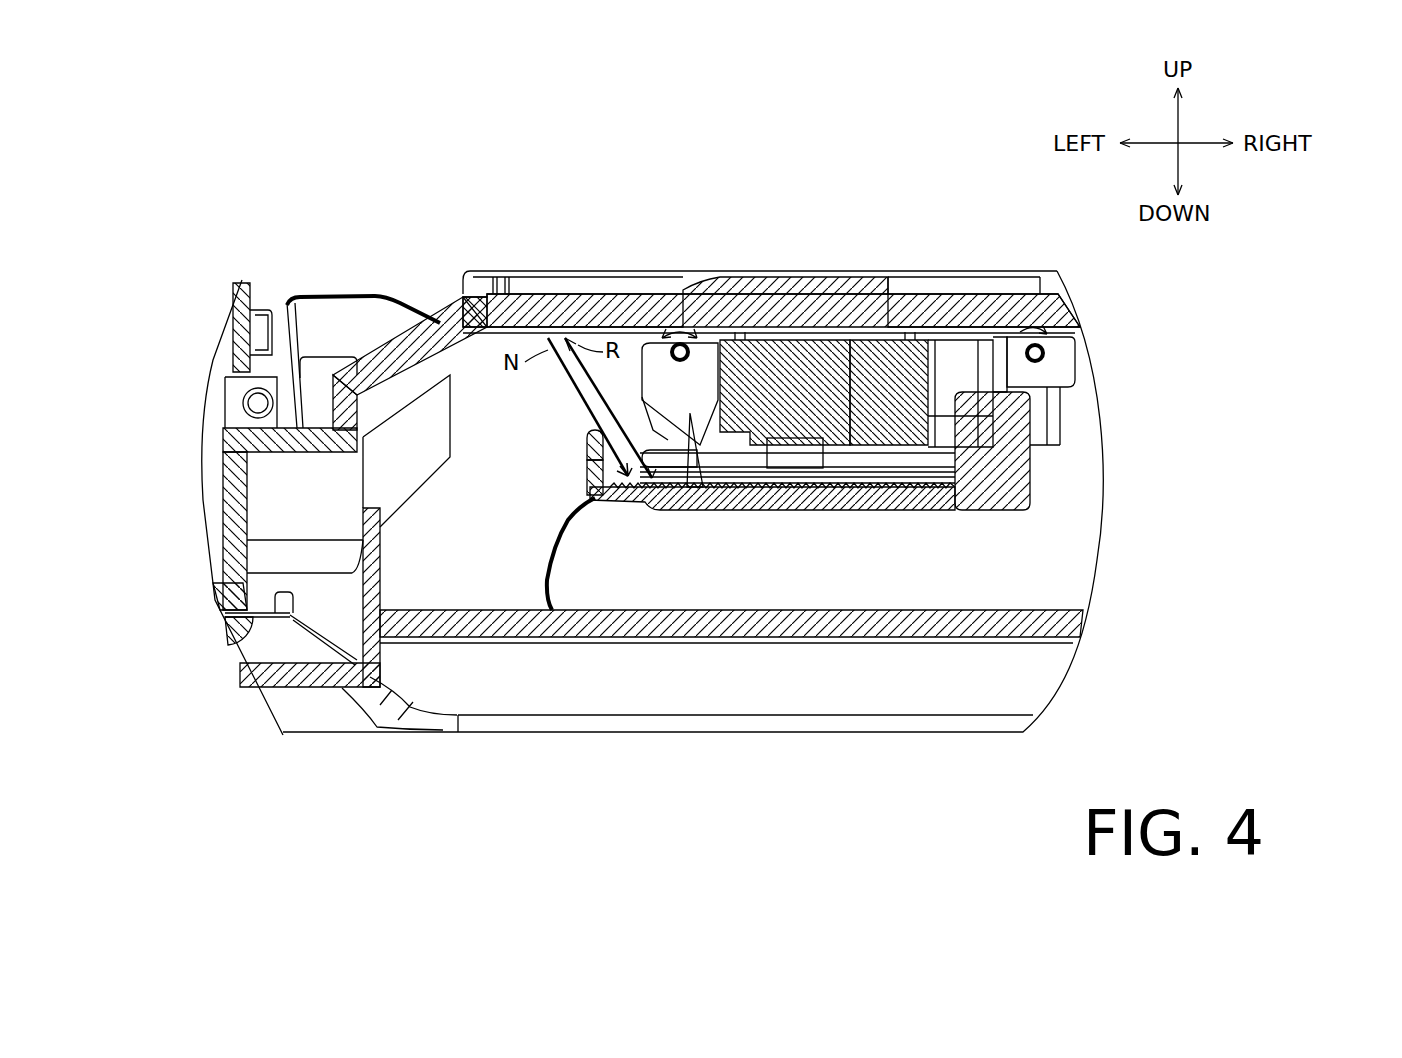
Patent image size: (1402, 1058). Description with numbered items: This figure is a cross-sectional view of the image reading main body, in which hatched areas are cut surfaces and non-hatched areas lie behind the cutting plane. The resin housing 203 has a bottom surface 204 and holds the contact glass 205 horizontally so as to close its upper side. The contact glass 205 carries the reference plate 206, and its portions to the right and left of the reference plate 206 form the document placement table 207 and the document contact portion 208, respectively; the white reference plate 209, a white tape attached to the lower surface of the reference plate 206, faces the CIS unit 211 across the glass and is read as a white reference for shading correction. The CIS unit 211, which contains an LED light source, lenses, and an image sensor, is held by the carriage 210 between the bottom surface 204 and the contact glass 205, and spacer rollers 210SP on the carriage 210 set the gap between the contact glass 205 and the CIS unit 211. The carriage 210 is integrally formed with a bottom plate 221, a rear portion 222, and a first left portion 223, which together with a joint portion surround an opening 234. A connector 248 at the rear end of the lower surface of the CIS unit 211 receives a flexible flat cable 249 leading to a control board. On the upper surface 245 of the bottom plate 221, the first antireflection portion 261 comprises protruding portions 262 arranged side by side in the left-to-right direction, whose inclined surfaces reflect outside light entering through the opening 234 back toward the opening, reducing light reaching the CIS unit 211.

The housing 203 is at (763, 640).
The bottom surface 204 is at (917, 610).
The contact glass 205 is at (593, 305).
The reference plate 206 is at (813, 273).
The document placement table 207 is at (965, 312).
The document contact portion 208 is at (545, 310).
The white reference plate 209 is at (767, 290).
The carriage 210 is at (1040, 496).
The spacer rollers 210SP is at (683, 320).
The CIS unit 211 is at (850, 375).
The bottom plate 221 is at (863, 503).
The rear portion 222 is at (587, 450).
The first left portion 223 is at (587, 480).
The opening 234 is at (600, 420).
The upper surface 245 is at (912, 490).
The connector 248 is at (777, 462).
The flexible flat cable 249 is at (553, 570).
The first antireflection portion 261 is at (645, 433).
The protruding portions 262 is at (700, 440).